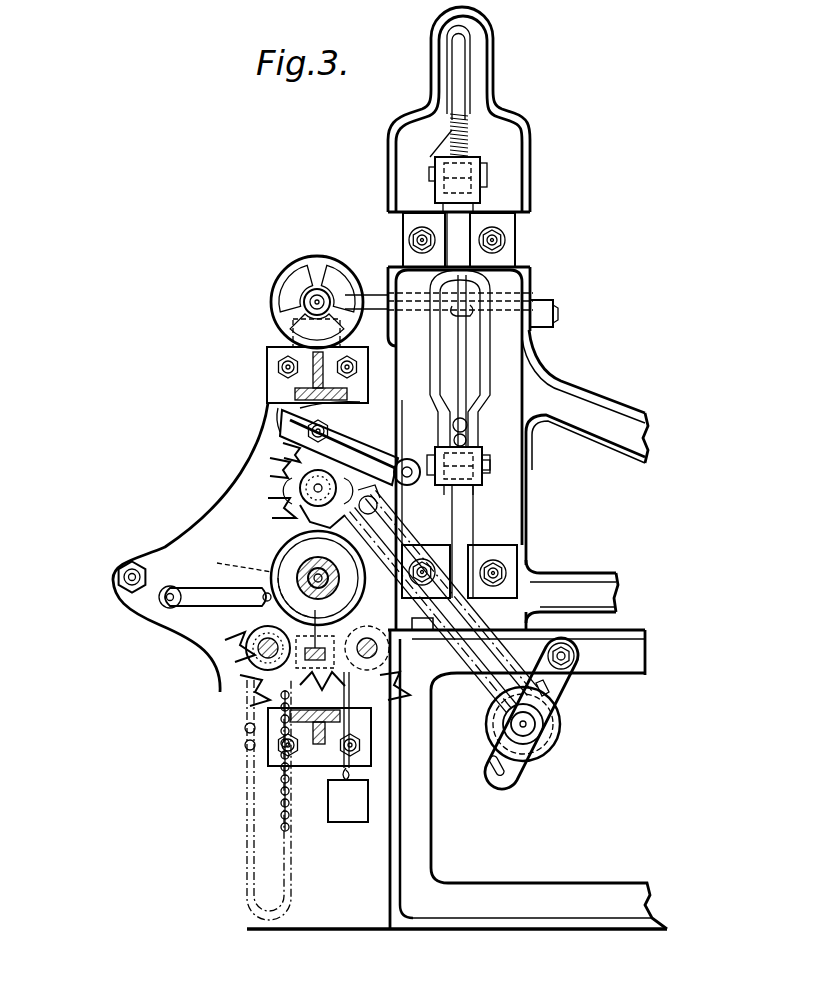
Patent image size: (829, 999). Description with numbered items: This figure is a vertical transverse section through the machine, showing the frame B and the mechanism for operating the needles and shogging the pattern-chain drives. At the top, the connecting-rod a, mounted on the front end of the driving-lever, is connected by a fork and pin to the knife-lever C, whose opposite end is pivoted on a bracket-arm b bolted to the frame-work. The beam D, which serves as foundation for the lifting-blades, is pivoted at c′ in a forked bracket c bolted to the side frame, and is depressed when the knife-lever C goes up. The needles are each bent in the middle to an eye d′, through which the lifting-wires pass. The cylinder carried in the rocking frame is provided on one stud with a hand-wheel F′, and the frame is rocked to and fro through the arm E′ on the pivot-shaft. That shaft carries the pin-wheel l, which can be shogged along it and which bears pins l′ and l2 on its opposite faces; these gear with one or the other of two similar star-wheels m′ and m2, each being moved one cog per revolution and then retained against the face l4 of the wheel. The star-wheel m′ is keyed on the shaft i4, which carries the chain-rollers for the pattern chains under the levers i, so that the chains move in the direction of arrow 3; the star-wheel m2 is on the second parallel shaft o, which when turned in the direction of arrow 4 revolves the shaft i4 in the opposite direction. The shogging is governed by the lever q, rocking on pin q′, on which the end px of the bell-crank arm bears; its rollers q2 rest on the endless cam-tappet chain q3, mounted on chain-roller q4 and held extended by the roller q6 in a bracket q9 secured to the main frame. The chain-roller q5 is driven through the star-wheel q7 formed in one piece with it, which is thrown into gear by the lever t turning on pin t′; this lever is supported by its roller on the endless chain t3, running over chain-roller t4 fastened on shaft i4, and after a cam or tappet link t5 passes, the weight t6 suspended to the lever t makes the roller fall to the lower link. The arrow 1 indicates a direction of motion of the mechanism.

The frame B is at (478, 52).
The knife-lever C is at (458, 142).
The bracket-arm b is at (470, 230).
The hand-wheel F′ is at (312, 268).
The connecting-rod a is at (372, 297).
The eye of needle d′ is at (458, 318).
The beam D is at (460, 464).
The pivot of beam c′ is at (488, 470).
The forked bracket c is at (463, 527).
The lever q is at (370, 452).
The end of upper arm of lever P px is at (348, 403).
The pin q′ is at (409, 460).
The rollers q2 is at (290, 443).
The star-wheel q7 is at (272, 462).
The chain-roller q4 is at (312, 488).
The chain-roller q5 is at (300, 520).
The endless chain q3 is at (370, 510).
The direction arrow 1 is at (274, 545).
The levers i is at (132, 562).
The lever t is at (210, 605).
The pin t′ is at (170, 590).
The pin of pin-wheel l′ is at (234, 565).
The pin-wheel l is at (360, 568).
The arm E′ is at (315, 557).
The face of pin-wheel l4 is at (368, 582).
The pin of pin-wheel l2 is at (257, 623).
The star-wheel m′ is at (227, 656).
The shaft i4 is at (258, 668).
The shaft o is at (362, 652).
The arrow 4 is at (358, 640).
The star-wheel m2 is at (396, 692).
The endless chain t3 is at (260, 748).
The chain-roller t4 is at (262, 700).
The arrow 3 is at (247, 746).
The cam or tappet link t5 is at (290, 784).
The weight t6 is at (344, 816).
The roller q6 is at (553, 727).
The bracket q9 is at (552, 692).